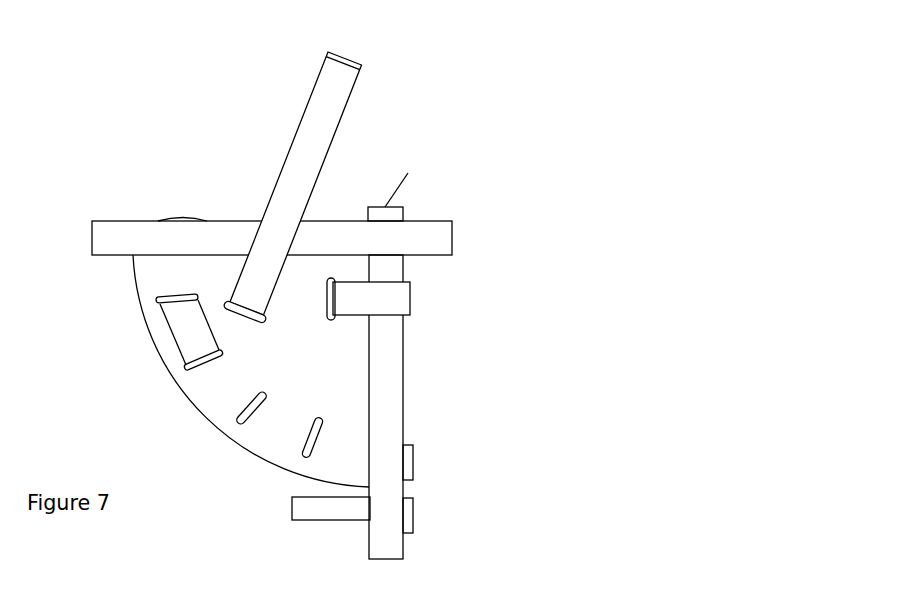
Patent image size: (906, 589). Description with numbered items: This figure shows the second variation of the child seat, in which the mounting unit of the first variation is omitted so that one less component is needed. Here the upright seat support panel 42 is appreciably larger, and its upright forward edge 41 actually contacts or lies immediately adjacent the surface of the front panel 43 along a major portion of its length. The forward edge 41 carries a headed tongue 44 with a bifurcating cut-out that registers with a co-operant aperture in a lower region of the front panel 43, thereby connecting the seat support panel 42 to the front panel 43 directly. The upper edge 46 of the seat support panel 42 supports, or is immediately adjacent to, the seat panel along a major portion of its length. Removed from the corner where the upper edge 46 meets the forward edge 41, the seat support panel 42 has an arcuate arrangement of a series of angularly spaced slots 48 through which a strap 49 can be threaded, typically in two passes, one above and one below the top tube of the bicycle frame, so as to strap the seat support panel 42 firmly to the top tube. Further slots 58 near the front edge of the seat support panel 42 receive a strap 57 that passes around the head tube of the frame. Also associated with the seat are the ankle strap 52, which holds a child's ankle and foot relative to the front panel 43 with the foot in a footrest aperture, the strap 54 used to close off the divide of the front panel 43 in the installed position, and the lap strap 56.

The forward edge 41 is at (369, 348).
The upright seat support panel 42 is at (313, 370).
The front panel 43 is at (390, 267).
The headed tongue 44 is at (413, 462).
The upper edge 46 is at (172, 253).
The angularly spaced slots 48 is at (312, 440).
The strap 49 is at (188, 333).
The ankle strap 52 is at (292, 503).
The strap 54 is at (413, 518).
The lap strap 56 is at (310, 145).
The strap 57 is at (390, 293).
The slots 58 is at (220, 303).